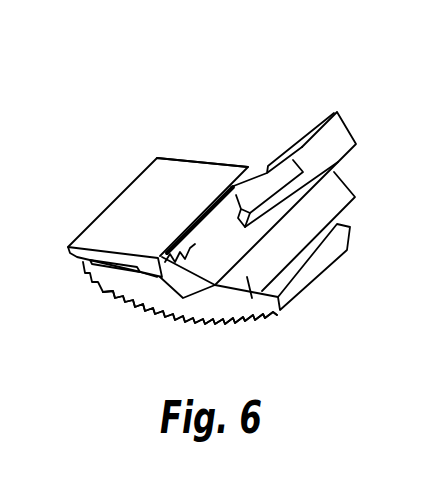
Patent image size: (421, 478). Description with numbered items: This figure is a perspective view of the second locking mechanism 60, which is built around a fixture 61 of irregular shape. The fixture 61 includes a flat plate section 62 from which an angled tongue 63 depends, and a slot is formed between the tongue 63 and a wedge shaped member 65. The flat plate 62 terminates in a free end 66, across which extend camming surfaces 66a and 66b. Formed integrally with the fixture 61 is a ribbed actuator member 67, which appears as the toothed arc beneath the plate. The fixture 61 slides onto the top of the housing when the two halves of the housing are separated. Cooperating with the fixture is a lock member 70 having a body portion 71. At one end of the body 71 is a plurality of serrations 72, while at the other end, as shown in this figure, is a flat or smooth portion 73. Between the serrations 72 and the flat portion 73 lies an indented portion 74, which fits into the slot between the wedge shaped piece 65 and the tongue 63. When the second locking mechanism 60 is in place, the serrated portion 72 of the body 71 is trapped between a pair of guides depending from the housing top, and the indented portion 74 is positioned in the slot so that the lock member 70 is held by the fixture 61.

The second locking mechanism 60 is at (158, 363).
The fixture 61 is at (212, 152).
The flat plate section 62 is at (170, 158).
The angled tongue 63 is at (290, 182).
The wedge shaped member 65 is at (262, 313).
The free end 66 is at (72, 247).
The camming surface 66a is at (102, 289).
The camming surface 66b is at (68, 259).
The ribbed actuator member 67 is at (230, 327).
The lock member 70 is at (352, 121).
The body portion 71 is at (185, 258).
The serrations 72 is at (192, 230).
The flat portion 73 is at (312, 128).
The indented portion 74 is at (275, 217).